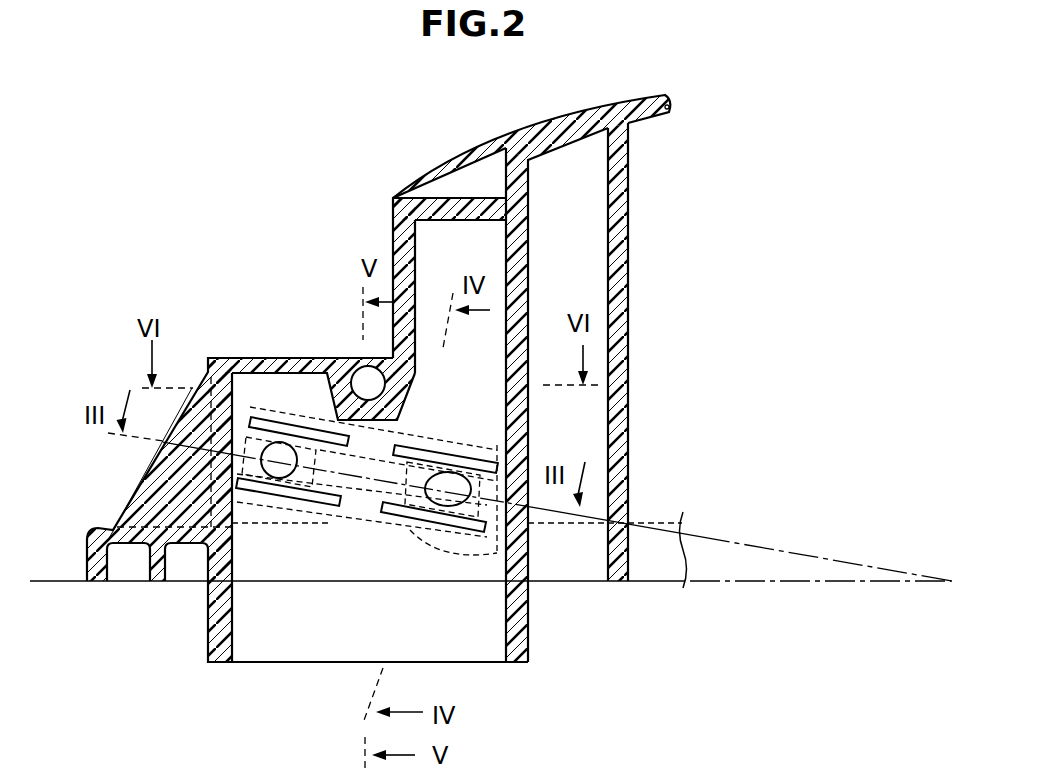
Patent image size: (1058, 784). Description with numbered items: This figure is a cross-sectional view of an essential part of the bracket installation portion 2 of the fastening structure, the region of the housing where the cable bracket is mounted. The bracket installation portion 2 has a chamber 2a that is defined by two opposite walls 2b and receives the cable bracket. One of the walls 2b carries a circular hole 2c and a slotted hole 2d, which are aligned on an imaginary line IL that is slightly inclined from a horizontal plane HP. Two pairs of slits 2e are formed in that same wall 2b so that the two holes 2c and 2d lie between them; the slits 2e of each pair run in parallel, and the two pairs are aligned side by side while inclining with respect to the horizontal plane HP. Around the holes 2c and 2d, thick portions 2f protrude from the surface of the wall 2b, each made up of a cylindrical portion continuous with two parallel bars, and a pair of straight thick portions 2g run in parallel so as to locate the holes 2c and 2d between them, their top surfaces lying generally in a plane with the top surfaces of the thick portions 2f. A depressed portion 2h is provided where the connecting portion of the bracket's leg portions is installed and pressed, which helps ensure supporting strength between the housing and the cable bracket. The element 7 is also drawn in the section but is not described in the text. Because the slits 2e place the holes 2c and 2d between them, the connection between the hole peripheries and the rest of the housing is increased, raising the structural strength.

The bracket installation portion 2 is at (478, 402).
The chamber 2a is at (407, 643).
The walls 2b is at (480, 647).
The circular hole 2c is at (284, 443).
The slotted hole 2d is at (470, 474).
The slits 2e is at (437, 455).
The thick portions 2f is at (258, 458).
The straight thick portions 2g is at (317, 418).
The depressed portion 2h is at (362, 483).
The housing base 7 is at (208, 635).
The imaginary line IL is at (774, 541).
The horizontal plane HP is at (785, 582).